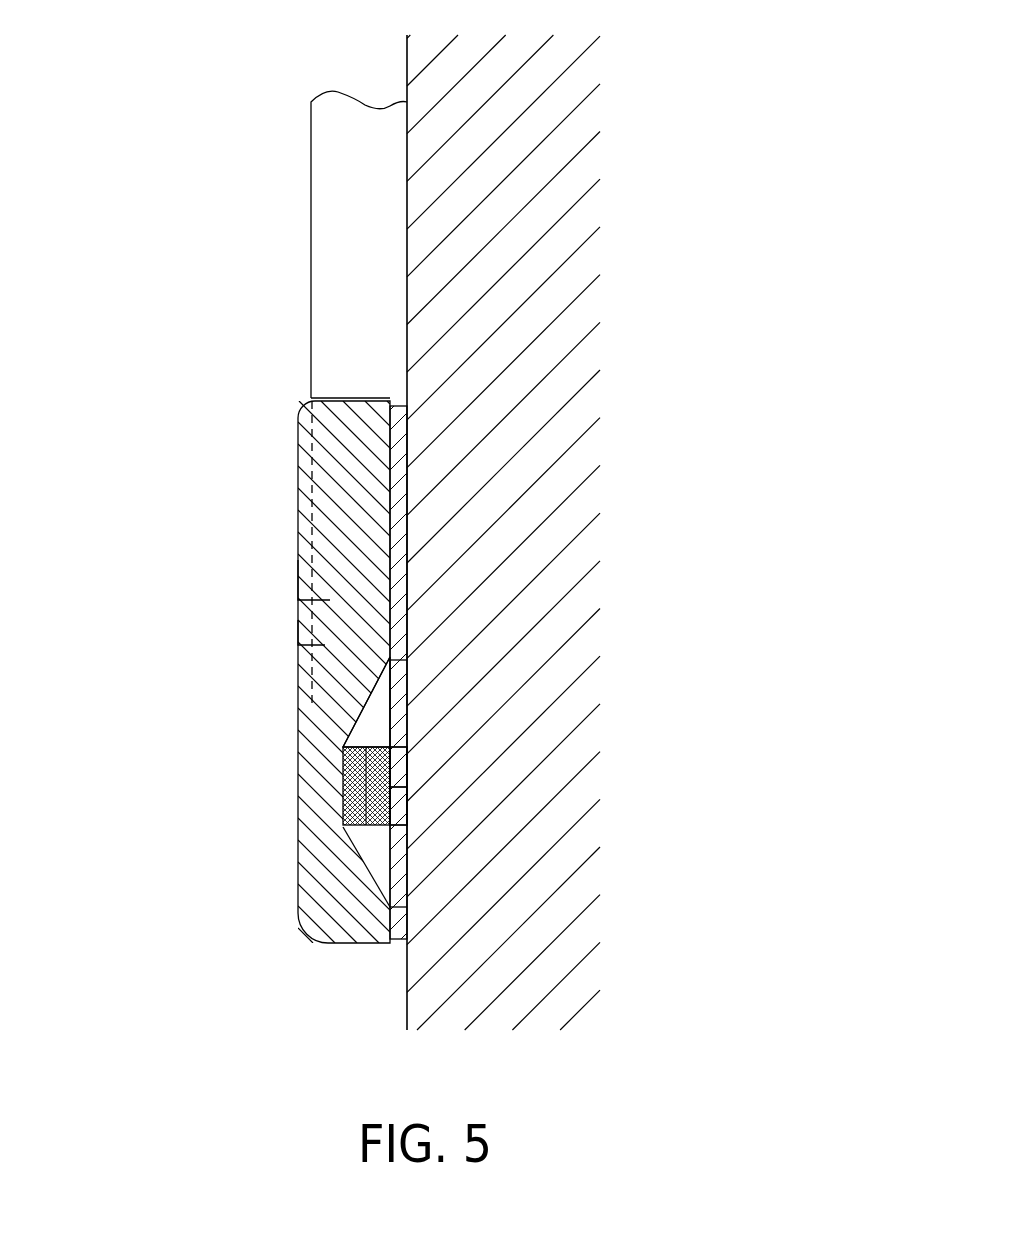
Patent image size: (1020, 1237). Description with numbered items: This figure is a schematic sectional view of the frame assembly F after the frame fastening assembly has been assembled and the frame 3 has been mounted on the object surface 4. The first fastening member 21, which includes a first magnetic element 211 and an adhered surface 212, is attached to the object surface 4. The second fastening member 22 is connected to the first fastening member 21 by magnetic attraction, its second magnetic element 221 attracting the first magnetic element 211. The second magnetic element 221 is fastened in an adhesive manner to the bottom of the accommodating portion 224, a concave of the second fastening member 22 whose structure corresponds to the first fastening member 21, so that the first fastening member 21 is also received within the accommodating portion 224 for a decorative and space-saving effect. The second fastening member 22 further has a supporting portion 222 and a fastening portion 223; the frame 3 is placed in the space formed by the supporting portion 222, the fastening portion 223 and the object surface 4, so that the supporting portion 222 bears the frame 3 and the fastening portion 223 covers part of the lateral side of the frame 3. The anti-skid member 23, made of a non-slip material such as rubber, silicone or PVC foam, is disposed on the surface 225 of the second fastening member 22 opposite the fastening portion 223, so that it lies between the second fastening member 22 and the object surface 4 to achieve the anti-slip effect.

The frame assembly F is at (191, 86).
The frame 3 is at (330, 250).
The object surface 4 is at (410, 348).
The first fastening member 21 is at (697, 737).
The first magnetic element 211 is at (400, 800).
The adhered surface 212 is at (400, 776).
The second fastening member 22 is at (186, 579).
The second magnetic element 221 is at (345, 800).
The supporting portion 222 is at (400, 708).
The fastening portion 223 is at (302, 632).
The accommodating portion 224 is at (344, 745).
The surface 225 is at (300, 585).
The anti-skid member 23 is at (300, 588).